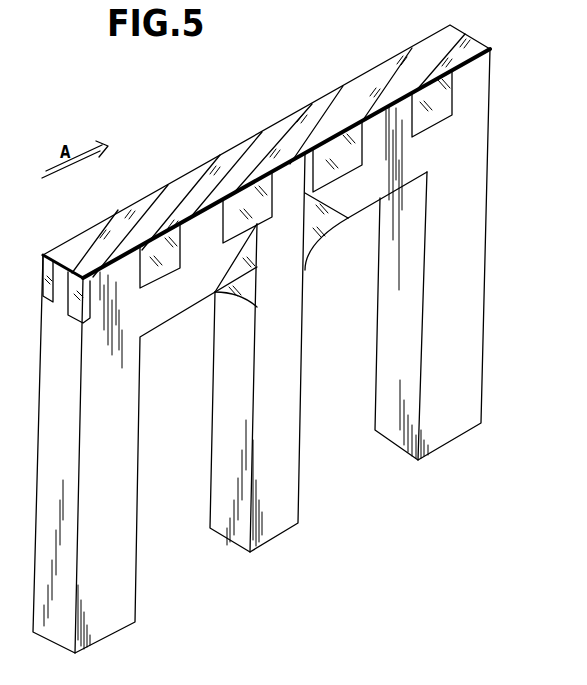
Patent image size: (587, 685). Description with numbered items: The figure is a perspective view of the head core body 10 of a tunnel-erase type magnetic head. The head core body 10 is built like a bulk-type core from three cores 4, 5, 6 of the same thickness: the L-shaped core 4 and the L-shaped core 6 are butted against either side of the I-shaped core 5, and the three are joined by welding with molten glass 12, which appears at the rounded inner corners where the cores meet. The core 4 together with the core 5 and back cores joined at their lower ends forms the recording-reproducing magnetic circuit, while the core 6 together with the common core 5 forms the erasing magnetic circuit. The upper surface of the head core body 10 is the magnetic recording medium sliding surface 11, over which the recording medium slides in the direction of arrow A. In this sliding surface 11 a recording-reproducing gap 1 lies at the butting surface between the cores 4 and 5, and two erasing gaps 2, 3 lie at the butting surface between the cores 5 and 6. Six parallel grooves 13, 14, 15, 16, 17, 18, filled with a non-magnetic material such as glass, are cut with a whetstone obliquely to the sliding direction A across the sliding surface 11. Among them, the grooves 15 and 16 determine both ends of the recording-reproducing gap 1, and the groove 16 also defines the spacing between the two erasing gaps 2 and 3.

The recording-reproducing gap 1 is at (243, 170).
The erasing gap 2 is at (278, 132).
The erasing gap 3 is at (300, 145).
The core 4 is at (117, 625).
The core 5 is at (290, 527).
The core 6 is at (447, 437).
The head core body 10 is at (150, 135).
The magnetic recording medium sliding surface 11 is at (263, 138).
The molten glass 12 is at (237, 287).
The groove 13 is at (55, 252).
The groove 14 is at (137, 208).
The groove 15 is at (222, 162).
The groove 16 is at (310, 113).
The groove 17 is at (412, 53).
The groove 18 is at (467, 40).